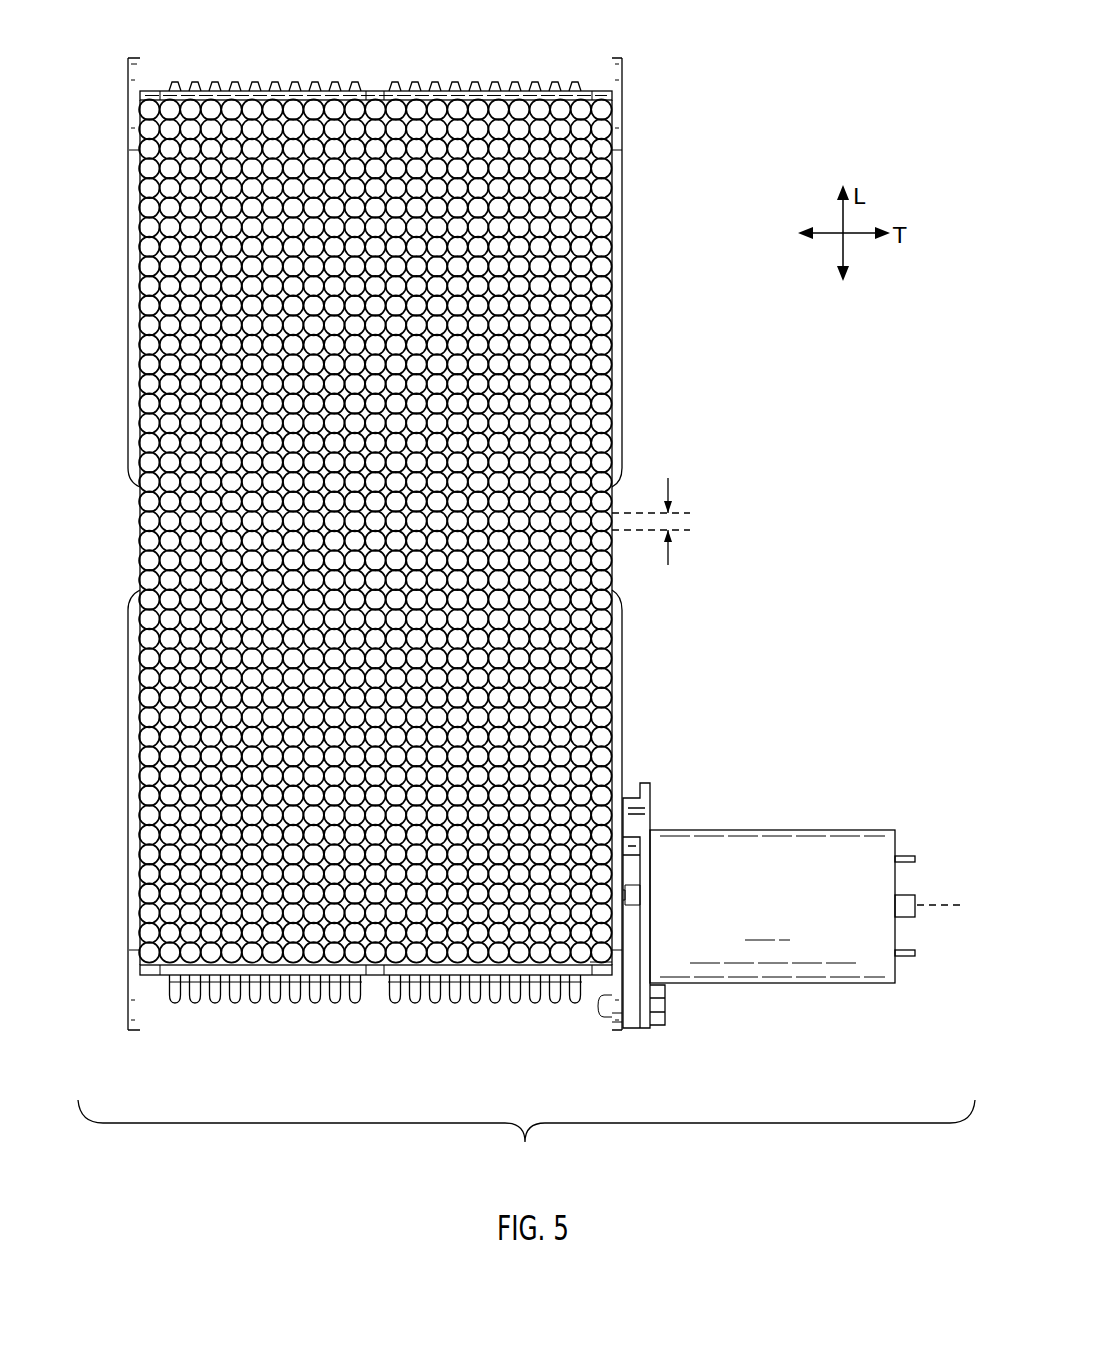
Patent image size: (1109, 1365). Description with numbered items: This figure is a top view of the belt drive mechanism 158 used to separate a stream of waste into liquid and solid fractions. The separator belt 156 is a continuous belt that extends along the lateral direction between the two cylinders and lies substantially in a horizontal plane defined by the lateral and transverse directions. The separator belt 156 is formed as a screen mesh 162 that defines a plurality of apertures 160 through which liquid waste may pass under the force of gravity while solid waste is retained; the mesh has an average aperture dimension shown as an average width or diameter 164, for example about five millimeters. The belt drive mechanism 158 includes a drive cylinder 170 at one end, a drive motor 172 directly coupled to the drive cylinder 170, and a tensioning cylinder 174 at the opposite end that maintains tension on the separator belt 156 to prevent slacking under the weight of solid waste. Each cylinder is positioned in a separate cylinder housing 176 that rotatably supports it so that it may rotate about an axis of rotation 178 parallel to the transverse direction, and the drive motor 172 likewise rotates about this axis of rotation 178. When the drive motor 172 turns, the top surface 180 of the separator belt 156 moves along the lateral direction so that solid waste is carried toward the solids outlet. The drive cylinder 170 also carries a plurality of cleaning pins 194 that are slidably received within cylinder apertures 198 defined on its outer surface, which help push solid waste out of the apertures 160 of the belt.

The separator belt 156 is at (379, 532).
The belt drive mechanism 158 is at (526, 1138).
The apertures 160 is at (203, 527).
The screen mesh 162 is at (173, 569).
The average width or diameter 164 is at (668, 480).
The drive cylinder 170 is at (128, 923).
The drive motor 172 is at (791, 906).
The tensioning cylinder 174 is at (120, 125).
The cylinder housing 176 is at (620, 358).
The axis of rotation 178 is at (930, 905).
The top surface 180 is at (256, 308).
The cleaning pins 194 is at (287, 90).
The cylinder apertures 198 is at (338, 990).